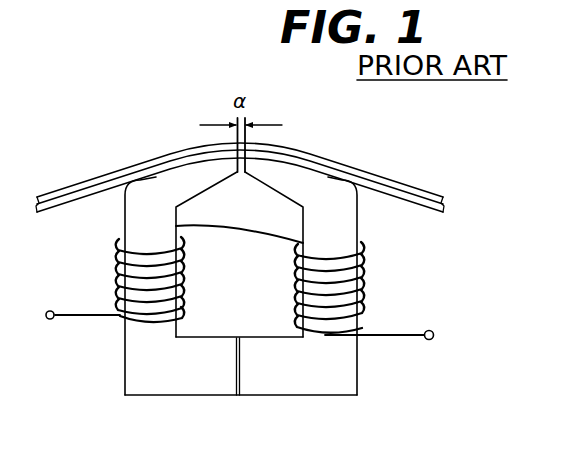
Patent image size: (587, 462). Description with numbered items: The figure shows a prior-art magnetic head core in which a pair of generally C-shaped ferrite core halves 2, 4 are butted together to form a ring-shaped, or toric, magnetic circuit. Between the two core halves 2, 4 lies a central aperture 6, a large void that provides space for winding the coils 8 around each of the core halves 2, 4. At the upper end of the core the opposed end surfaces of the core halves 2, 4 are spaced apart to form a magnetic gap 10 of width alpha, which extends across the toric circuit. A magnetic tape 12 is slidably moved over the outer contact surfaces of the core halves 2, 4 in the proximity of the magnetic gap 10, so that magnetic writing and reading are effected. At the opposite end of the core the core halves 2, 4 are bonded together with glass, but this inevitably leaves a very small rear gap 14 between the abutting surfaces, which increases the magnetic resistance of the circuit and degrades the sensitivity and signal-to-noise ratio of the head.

The C-shaped ferrite core half 2 is at (145, 386).
The C-shaped ferrite core half 4 is at (297, 386).
The central aperture 6 is at (247, 289).
The coils 8 is at (118, 260).
The magnetic gap 10 is at (239, 173).
The magnetic tape 12 is at (417, 177).
The rear gap 14 is at (238, 397).